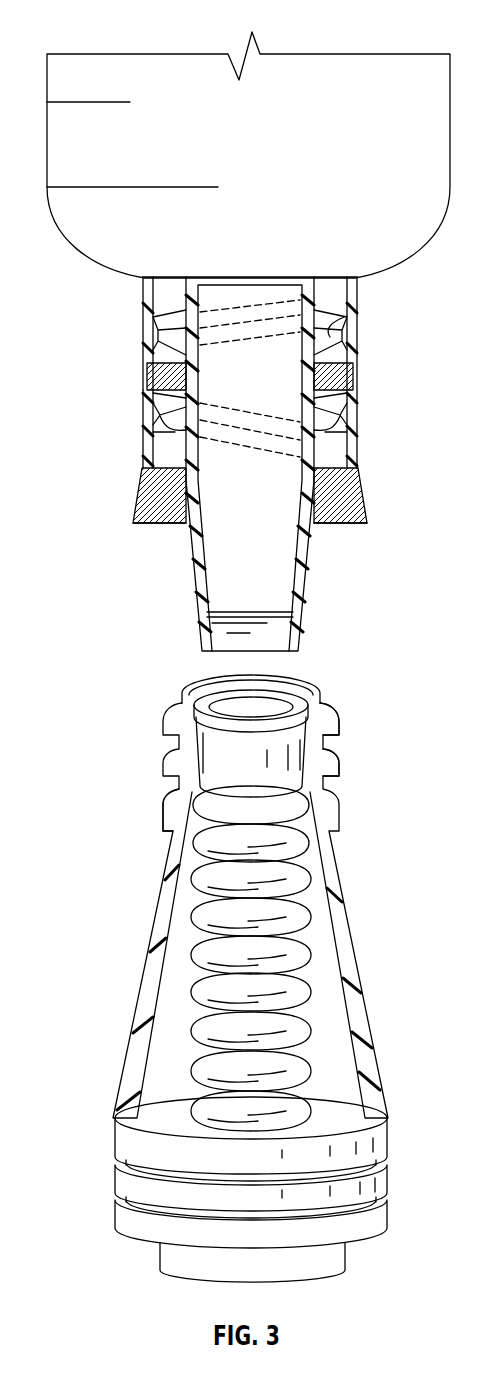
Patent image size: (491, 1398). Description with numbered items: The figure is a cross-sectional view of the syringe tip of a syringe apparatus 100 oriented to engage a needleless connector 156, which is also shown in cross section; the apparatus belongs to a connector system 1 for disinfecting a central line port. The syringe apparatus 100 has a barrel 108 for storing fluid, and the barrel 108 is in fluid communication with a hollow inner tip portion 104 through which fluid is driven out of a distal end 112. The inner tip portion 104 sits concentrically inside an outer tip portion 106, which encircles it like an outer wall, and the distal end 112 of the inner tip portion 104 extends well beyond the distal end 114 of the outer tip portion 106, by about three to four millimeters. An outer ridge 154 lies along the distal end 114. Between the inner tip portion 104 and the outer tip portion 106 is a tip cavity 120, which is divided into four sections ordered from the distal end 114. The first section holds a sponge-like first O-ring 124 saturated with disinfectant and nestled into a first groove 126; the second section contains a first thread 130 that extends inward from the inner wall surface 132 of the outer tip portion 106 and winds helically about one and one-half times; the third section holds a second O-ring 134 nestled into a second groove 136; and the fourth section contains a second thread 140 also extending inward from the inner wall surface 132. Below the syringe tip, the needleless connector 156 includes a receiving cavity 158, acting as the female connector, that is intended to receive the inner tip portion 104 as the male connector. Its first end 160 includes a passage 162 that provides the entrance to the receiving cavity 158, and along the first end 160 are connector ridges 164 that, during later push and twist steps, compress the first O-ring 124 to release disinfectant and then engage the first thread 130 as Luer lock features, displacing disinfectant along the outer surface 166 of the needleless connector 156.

The connector system 1 is at (487, 274).
The syringe apparatus 100 is at (442, 270).
The hollow inner tip portion 104 is at (310, 571).
The outer tip portion 106 is at (357, 453).
The barrel 108 is at (47, 150).
The distal end of the inner tip portion 112 is at (297, 651).
The distal end of the outer tip portion 114 is at (138, 523).
The tip cavity 120 is at (169, 546).
The first O-ring 124 is at (337, 523).
The first groove 126 is at (140, 493).
The first thread 130 is at (150, 437).
The inner wall surface 132 is at (357, 418).
The second O-ring 134 is at (356, 364).
The second groove 136 is at (147, 382).
The second thread 140 is at (357, 333).
The outer ridge 154 is at (363, 512).
The needleless connector 156 is at (413, 950).
The receiving cavity 158 is at (318, 935).
The first end 160 is at (317, 695).
The passage 162 is at (207, 702).
The connector ridges 164 is at (333, 767).
The outer surface 166 is at (155, 812).